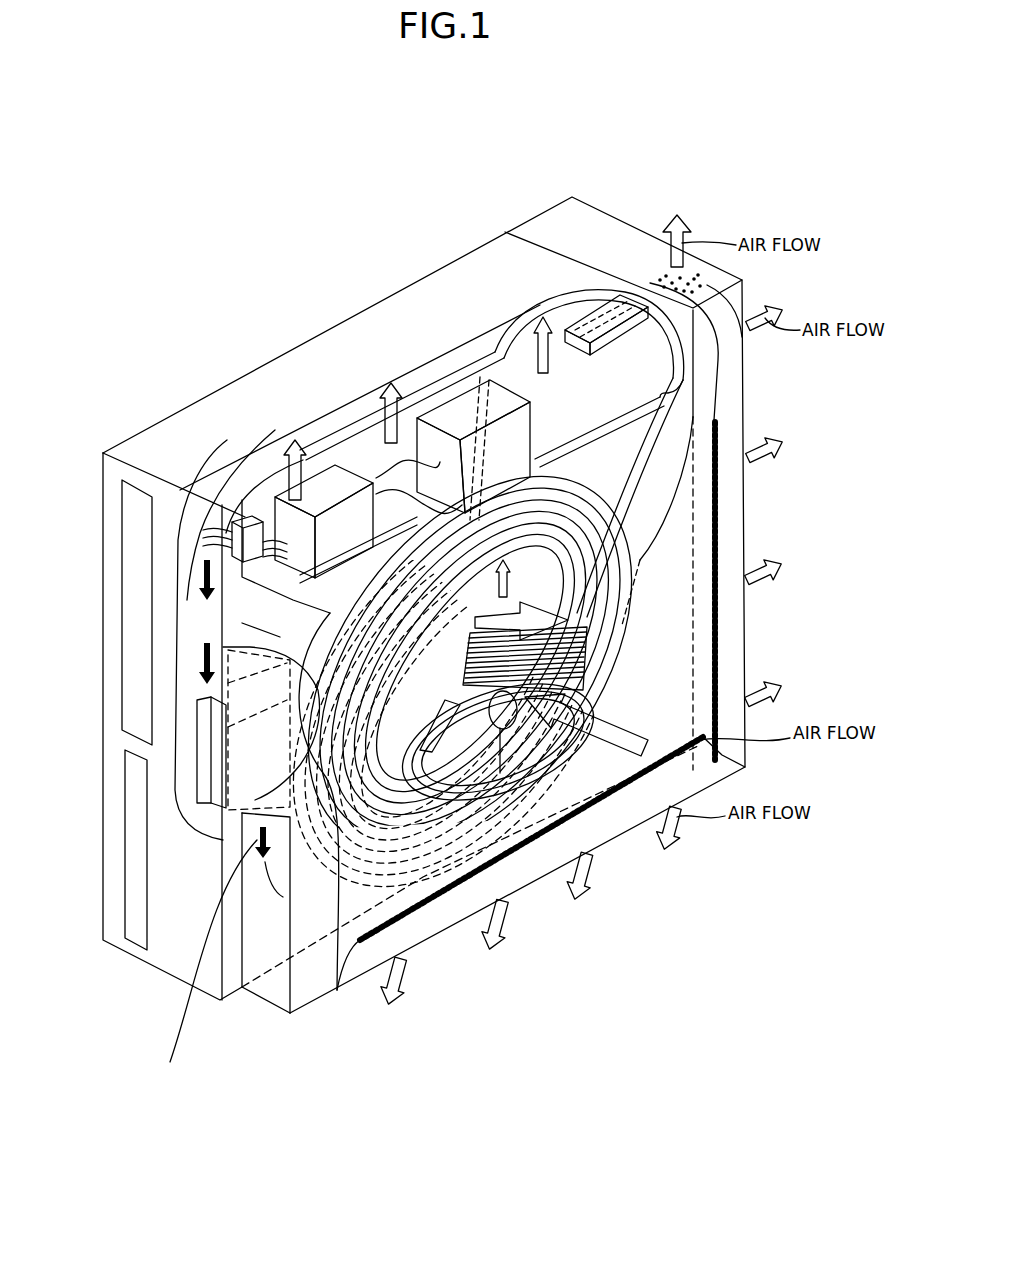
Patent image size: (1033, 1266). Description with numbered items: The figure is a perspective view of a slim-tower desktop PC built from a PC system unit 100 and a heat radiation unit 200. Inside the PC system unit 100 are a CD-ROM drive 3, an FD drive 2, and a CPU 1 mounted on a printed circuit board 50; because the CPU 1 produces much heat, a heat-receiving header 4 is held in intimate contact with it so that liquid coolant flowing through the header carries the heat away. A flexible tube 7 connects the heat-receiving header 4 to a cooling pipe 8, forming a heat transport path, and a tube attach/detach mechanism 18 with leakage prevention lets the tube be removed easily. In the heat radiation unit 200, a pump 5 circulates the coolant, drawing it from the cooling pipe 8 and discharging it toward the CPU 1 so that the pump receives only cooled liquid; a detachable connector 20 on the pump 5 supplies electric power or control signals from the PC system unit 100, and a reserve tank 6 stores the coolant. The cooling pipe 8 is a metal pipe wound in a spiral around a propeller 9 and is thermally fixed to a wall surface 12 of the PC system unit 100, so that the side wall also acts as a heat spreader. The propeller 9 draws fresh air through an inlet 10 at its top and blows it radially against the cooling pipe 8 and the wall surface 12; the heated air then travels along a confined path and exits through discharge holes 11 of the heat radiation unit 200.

The CPU 1 is at (247, 752).
The FD drive 2 is at (137, 880).
The CD-ROM drive 3 is at (137, 612).
The heat-receiving header 4 is at (205, 712).
The pump 5 is at (345, 535).
The reserve tank 6 is at (455, 415).
The flexible tube 7 is at (558, 330).
The cooling pipe 8 is at (643, 517).
The propeller 9 is at (500, 775).
The inlet 10 is at (600, 655).
The discharge holes 11 is at (713, 425).
The wall surface 12 is at (230, 965).
The tube attach/detach mechanism 18 is at (620, 290).
The detachable connector 20 is at (205, 522).
The printed circuit board 50 is at (237, 664).
The PC system unit 100 is at (555, 270).
The heat radiation unit 200 is at (707, 284).